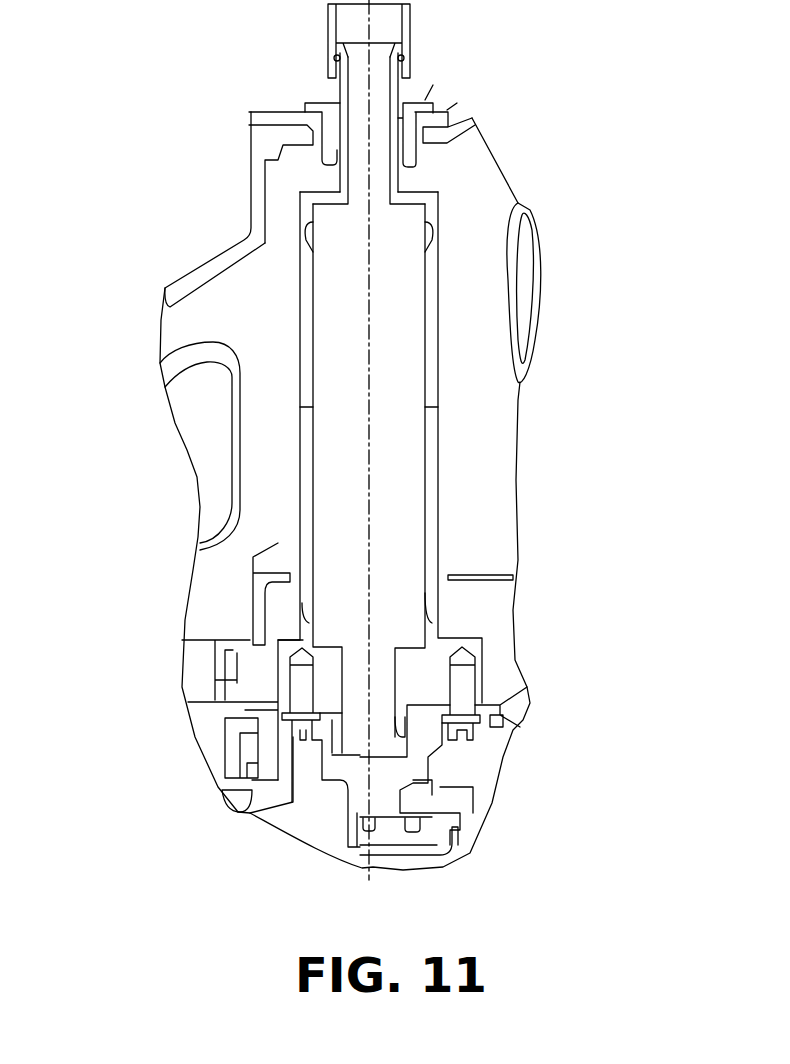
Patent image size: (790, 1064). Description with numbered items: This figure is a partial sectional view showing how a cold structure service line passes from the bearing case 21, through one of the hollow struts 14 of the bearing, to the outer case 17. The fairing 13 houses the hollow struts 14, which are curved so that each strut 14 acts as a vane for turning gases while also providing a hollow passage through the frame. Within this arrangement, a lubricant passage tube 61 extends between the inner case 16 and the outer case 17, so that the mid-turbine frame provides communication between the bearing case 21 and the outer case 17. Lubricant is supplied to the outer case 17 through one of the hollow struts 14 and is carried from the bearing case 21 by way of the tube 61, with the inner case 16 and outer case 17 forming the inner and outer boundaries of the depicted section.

The fairing 13 is at (212, 385).
The hollow strut 14 is at (240, 427).
The inner case 16 is at (260, 587).
The outer case 17 is at (273, 138).
The bearing case 21 is at (303, 850).
The lubricant passage tube 61 is at (438, 418).